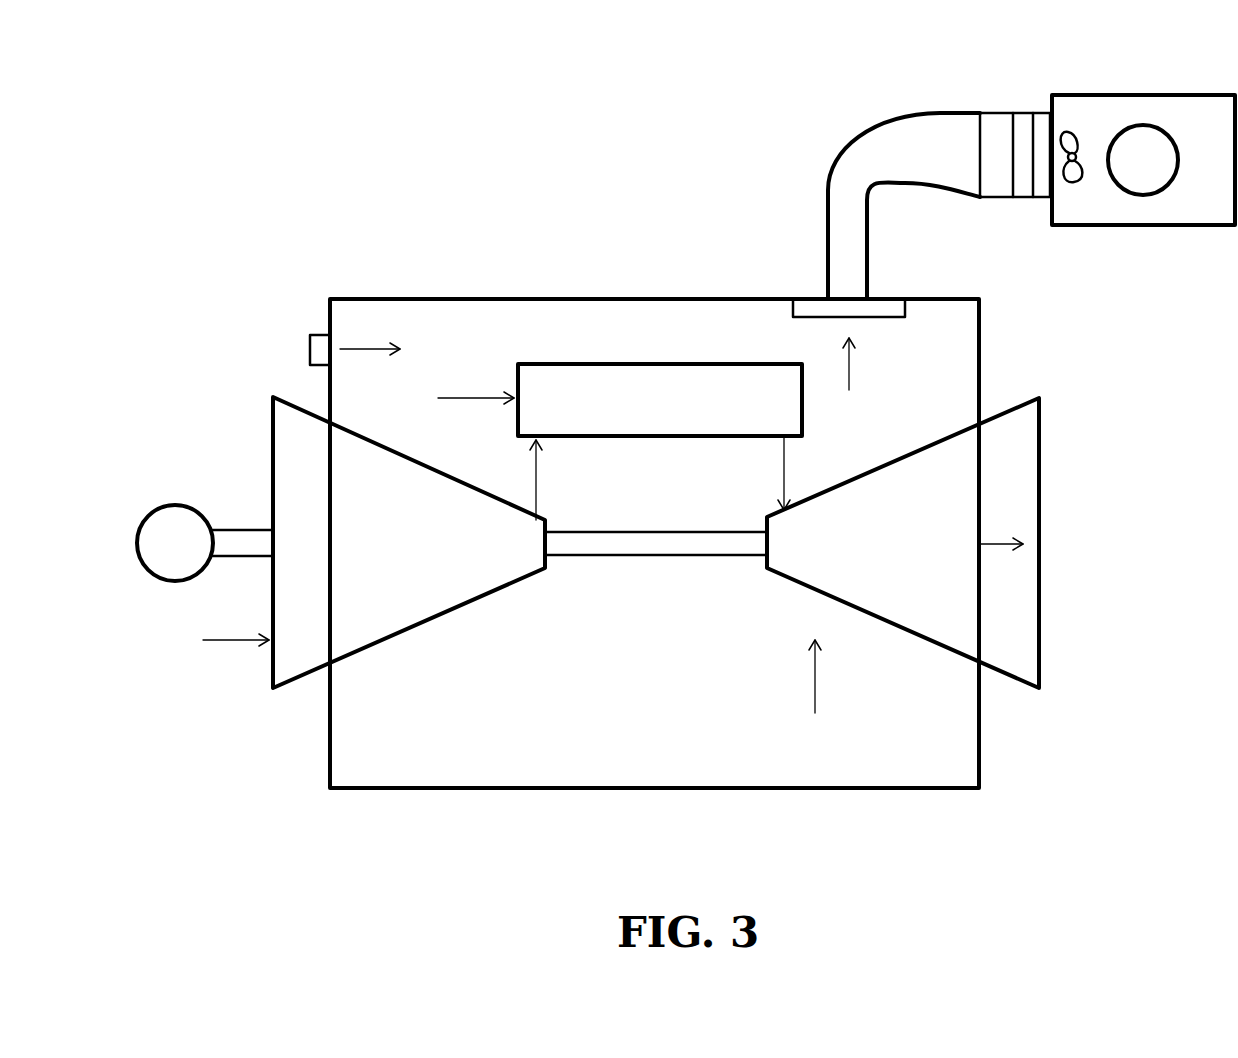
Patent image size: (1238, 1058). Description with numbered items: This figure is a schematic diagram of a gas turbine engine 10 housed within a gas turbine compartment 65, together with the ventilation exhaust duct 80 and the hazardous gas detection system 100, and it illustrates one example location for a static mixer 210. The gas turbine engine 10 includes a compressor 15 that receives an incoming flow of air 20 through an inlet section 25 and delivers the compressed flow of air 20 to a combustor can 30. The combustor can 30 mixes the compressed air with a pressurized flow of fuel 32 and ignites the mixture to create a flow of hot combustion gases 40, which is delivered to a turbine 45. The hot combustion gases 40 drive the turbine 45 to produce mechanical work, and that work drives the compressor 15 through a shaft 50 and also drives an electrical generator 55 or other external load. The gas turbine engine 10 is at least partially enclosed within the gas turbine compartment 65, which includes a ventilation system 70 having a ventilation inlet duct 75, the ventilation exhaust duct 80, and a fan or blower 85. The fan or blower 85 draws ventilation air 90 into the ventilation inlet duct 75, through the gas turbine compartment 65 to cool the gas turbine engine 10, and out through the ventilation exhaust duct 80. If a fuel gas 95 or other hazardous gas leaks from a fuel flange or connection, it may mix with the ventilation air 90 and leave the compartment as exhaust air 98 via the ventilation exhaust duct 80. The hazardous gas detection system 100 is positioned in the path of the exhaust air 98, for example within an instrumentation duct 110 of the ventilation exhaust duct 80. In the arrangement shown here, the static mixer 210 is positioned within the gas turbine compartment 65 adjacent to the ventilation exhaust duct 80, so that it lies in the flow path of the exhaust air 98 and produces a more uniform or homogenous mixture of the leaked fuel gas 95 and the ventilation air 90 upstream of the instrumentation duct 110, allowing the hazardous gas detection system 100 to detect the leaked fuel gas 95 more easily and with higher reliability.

The gas turbine engine 10 is at (370, 166).
The compressor 15 is at (417, 557).
The flow of air 20 is at (537, 478).
The inlet section 25 is at (305, 690).
The combustor can 30 is at (677, 415).
The flow of fuel 32 is at (472, 396).
The flow of hot combustion gases 40 is at (786, 462).
The turbine 45 is at (897, 557).
The shaft 50 is at (651, 557).
The electrical generator 55 is at (192, 557).
The gas turbine compartment 65 is at (570, 297).
The ventilation system 70 is at (317, 331).
The ventilation inlet duct 75 is at (310, 350).
The ventilation exhaust duct 80 is at (828, 201).
The fan or blower 85 is at (1078, 140).
The ventilation air 90 is at (375, 348).
The fuel gas 95 is at (810, 677).
The exhaust air 98 is at (852, 372).
The hazardous gas detection system 100 is at (1021, 103).
The instrumentation duct 110 is at (1000, 198).
The static mixer 210 is at (808, 318).